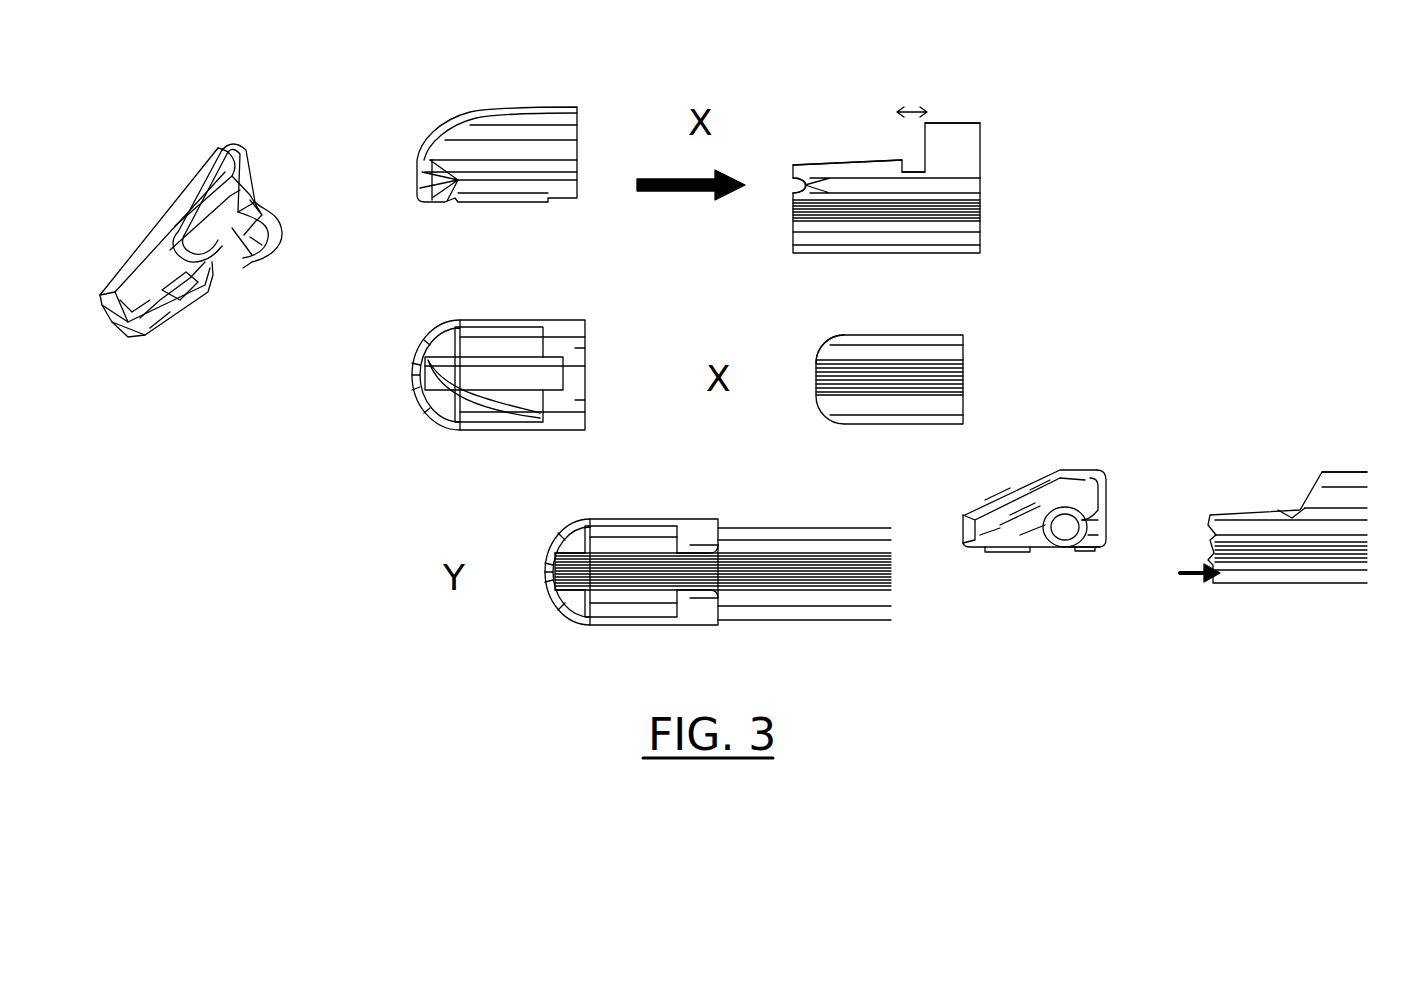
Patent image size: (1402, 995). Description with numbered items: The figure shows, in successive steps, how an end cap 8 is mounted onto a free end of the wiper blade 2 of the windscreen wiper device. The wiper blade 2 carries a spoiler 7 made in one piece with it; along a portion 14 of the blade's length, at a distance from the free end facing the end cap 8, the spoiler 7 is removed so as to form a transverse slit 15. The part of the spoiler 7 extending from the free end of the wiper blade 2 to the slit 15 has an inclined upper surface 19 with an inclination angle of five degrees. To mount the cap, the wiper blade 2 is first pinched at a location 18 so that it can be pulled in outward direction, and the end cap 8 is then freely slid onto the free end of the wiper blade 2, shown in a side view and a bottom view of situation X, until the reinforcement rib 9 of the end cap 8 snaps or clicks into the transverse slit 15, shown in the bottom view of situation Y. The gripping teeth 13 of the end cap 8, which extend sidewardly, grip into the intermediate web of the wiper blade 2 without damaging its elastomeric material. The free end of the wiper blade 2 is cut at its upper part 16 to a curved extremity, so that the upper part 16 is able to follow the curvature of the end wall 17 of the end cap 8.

The wiper blade 2 is at (873, 243).
The spoiler 7 is at (962, 126).
The end cap 8 is at (243, 120).
The reinforcement rib 9 is at (212, 235).
The gripping teeth 13 is at (580, 345).
The portion of the length of the wiper blade 14 is at (910, 102).
The transverse slit 15 is at (930, 178).
The upper part of the wiper blade 16 is at (790, 186).
The end wall 17 is at (413, 375).
The location 18 is at (1193, 593).
The inclined upper surface 19 is at (835, 162).